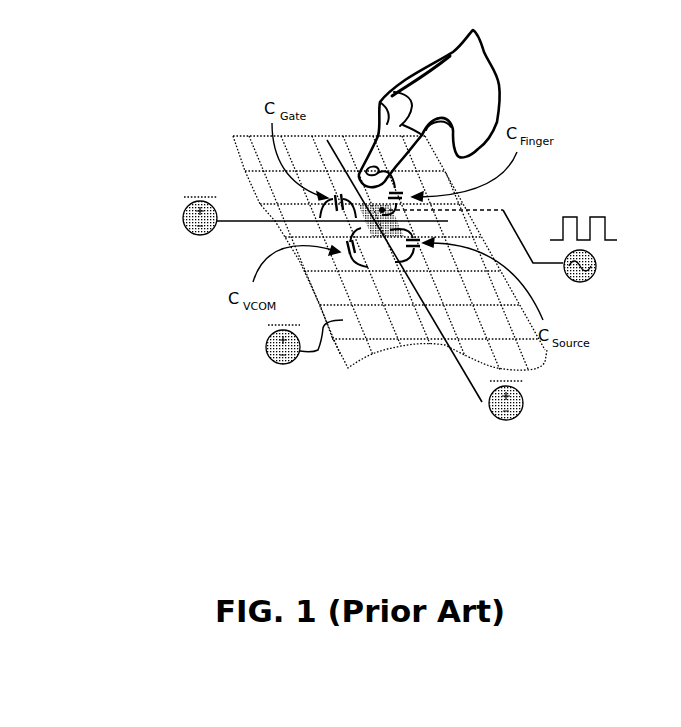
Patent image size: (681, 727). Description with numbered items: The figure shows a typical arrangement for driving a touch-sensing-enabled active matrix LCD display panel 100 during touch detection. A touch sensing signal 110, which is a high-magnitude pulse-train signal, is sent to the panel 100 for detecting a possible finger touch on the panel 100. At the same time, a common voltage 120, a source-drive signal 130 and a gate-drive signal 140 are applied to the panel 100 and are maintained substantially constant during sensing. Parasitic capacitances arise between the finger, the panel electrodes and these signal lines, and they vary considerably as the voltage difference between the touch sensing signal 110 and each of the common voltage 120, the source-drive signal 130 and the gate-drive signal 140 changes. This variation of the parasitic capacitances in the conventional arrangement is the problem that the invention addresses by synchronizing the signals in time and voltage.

The panel 100 is at (351, 368).
The touch sensing signal 110 is at (596, 265).
The common voltage 120 is at (520, 405).
The source-drive signal 130 is at (266, 346).
The gate-drive signal 140 is at (184, 222).